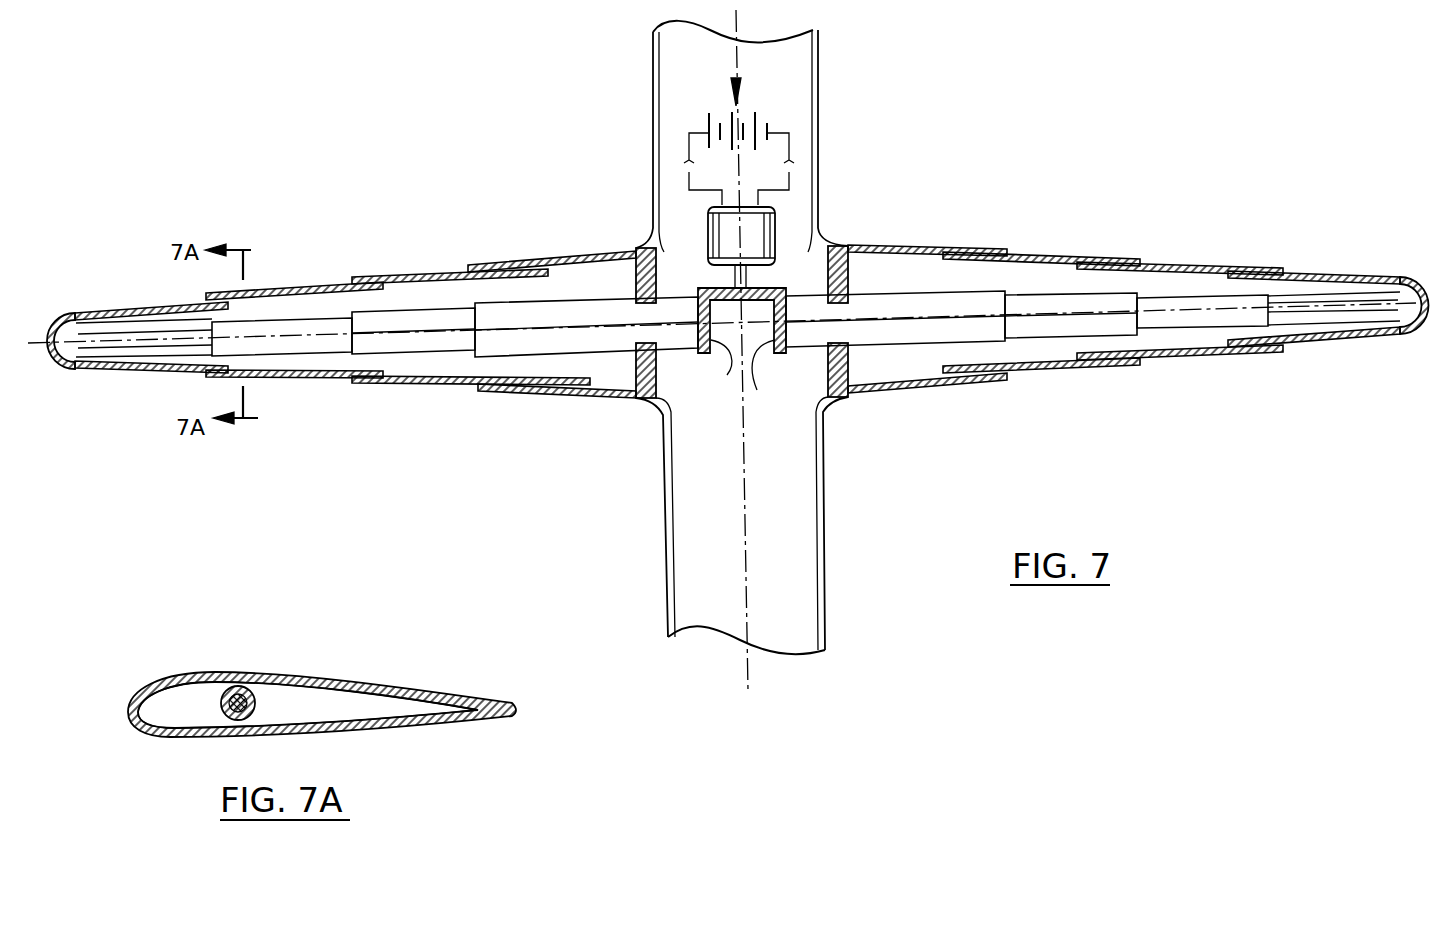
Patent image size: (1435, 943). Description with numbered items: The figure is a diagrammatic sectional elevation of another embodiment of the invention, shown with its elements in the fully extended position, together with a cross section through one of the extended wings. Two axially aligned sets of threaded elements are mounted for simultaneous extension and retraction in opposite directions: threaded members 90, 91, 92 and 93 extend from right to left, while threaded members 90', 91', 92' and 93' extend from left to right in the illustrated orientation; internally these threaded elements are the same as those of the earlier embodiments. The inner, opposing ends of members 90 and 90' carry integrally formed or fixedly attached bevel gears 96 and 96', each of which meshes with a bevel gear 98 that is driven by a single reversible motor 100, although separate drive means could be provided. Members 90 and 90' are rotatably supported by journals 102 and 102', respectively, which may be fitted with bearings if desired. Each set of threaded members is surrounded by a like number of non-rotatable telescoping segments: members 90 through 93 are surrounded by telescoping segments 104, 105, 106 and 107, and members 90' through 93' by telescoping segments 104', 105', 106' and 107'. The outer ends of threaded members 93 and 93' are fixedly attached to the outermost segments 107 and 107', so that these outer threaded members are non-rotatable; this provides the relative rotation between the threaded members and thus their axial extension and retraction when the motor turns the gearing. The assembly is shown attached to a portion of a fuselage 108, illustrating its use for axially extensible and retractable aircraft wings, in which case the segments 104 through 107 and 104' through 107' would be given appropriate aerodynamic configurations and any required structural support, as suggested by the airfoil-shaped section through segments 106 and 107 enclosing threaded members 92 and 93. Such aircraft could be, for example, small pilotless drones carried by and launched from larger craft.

In FIG. 7, the threaded member 90 is at (586, 373).
In FIG. 7, the threaded member 91 is at (413, 381).
In FIG. 7, the threaded member 92 is at (282, 384).
In FIG. 7A, the threaded member 92 is at (215, 670).
In FIG. 7, the threaded member 93 is at (144, 389).
In FIG. 7A, the threaded member 93 is at (266, 671).
In FIG. 7, the threaded member 90' is at (895, 365).
In FIG. 7, the threaded member 91' is at (1071, 361).
In FIG. 7, the threaded member 92' is at (1202, 358).
In FIG. 7, the threaded member 93' is at (1334, 353).
In FIG. 7, the bevel gear 96 is at (715, 367).
In FIG. 7, the bevel gear 96' is at (775, 372).
In FIG. 7, the bevel gear 98 is at (775, 283).
In FIG. 7, the reversible motor 100 is at (709, 232).
In FIG. 7, the journal 102 is at (682, 354).
In FIG. 7, the journal 102' is at (804, 366).
In FIG. 7, the telescoping segment 104 is at (552, 299).
In FIG. 7, the telescoping segment 105 is at (471, 292).
In FIG. 7, the telescoping segment 106 is at (294, 291).
In FIG. 7A, the telescoping segment 106 is at (322, 721).
In FIG. 7, the telescoping segment 107 is at (137, 291).
In FIG. 7A, the telescoping segment 107 is at (304, 733).
In FIG. 7, the telescoping segment 104' is at (927, 291).
In FIG. 7, the telescoping segment 105' is at (1041, 280).
In FIG. 7, the telescoping segment 106' is at (1180, 272).
In FIG. 7, the telescoping segment 107' is at (1328, 265).
In FIG. 7, the fuselage 108 is at (818, 63).